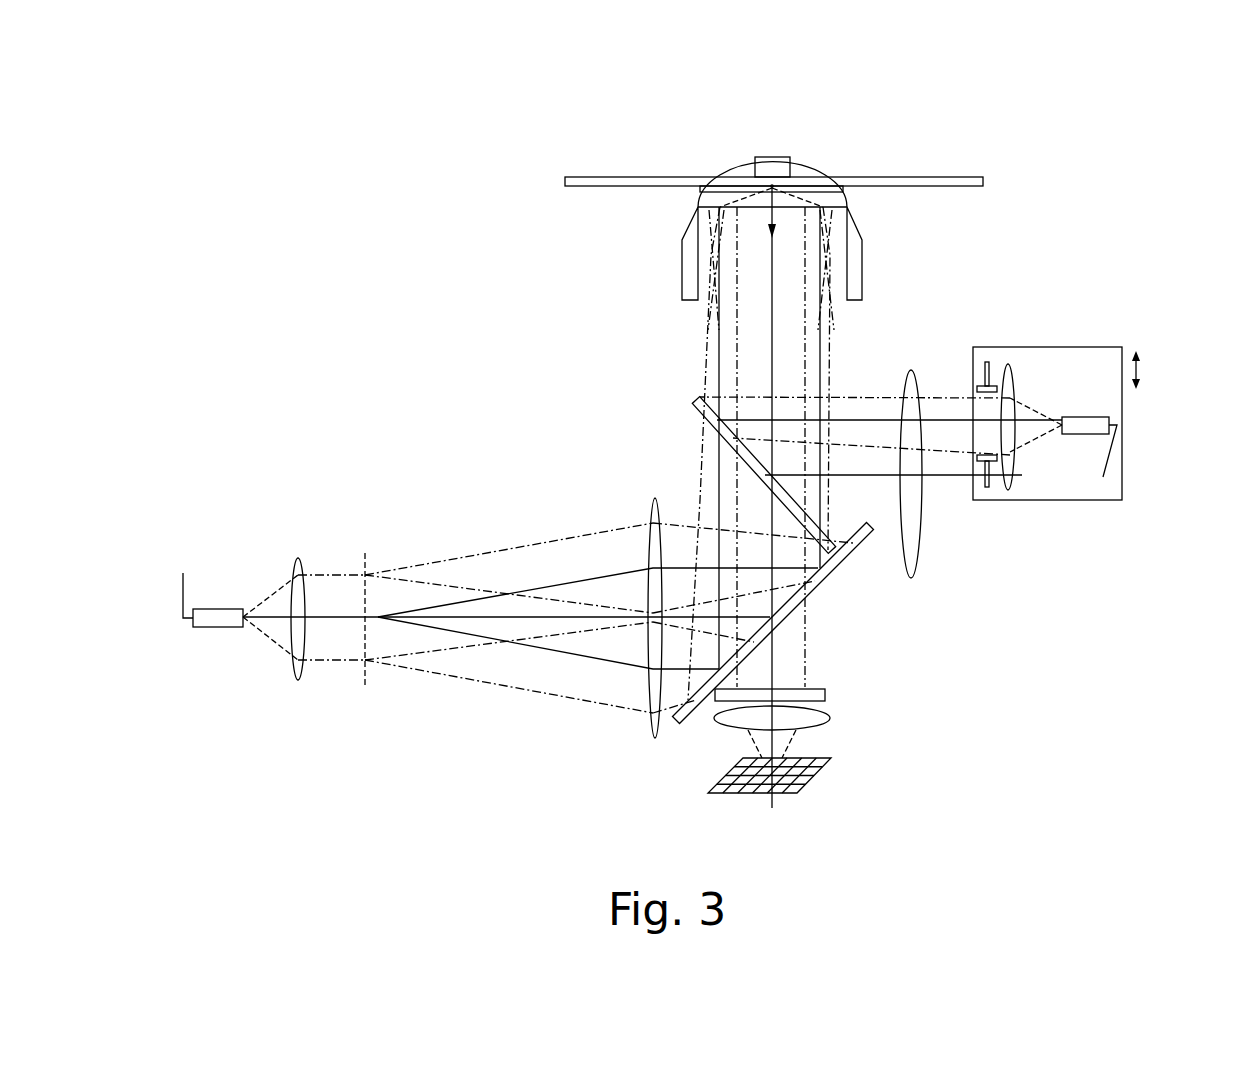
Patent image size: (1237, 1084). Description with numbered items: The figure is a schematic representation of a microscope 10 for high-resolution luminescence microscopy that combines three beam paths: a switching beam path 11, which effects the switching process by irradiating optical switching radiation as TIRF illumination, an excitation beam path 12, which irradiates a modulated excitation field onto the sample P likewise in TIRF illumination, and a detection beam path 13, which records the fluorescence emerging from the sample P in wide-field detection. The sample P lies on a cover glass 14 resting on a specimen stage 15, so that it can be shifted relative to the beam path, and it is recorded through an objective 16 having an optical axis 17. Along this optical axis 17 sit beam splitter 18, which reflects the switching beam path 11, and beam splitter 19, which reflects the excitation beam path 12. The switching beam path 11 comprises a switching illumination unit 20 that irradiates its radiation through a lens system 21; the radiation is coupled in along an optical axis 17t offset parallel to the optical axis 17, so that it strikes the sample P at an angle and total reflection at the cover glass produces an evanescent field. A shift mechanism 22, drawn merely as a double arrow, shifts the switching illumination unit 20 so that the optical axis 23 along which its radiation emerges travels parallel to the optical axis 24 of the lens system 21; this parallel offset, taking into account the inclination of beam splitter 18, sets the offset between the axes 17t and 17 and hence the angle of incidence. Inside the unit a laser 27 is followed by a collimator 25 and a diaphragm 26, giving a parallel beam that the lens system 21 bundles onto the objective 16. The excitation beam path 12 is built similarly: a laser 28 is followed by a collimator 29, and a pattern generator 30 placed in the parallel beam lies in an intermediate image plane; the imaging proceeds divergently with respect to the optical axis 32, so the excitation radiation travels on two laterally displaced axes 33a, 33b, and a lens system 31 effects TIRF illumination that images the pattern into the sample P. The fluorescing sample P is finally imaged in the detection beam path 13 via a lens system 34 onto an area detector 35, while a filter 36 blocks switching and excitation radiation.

The sample P is at (768, 184).
The microscope 10 is at (436, 352).
The switching beam path 11 is at (964, 264).
The excitation beam path 12 is at (400, 718).
The detection beam path 13 is at (845, 647).
The cover glass 14 is at (944, 176).
The specimen stage 15 is at (774, 156).
The objective 16 is at (832, 214).
The optical axis 17 is at (767, 380).
The offset optical axis 17t is at (716, 385).
The beam splitter 18 is at (700, 412).
The beam splitter 19 is at (698, 707).
The switching illumination unit 20 is at (1085, 346).
The lens system 21 is at (928, 532).
The shift mechanism 22 is at (1142, 368).
The optical axis 23 is at (857, 422).
The optical axis of the lens system 24 is at (900, 478).
The collimator 25 is at (995, 382).
The diaphragm 26 is at (982, 467).
The laser diode 27 is at (1087, 418).
The laser 28 is at (220, 607).
The collimator 29 is at (298, 560).
The pattern generator 30 is at (366, 560).
The lens system 31 is at (648, 713).
The optical axis 32 is at (465, 616).
The axis 33a is at (533, 588).
The axis 33b is at (555, 652).
The lens system 34 is at (830, 718).
The area detector 35 is at (820, 770).
The filter 36 is at (827, 696).